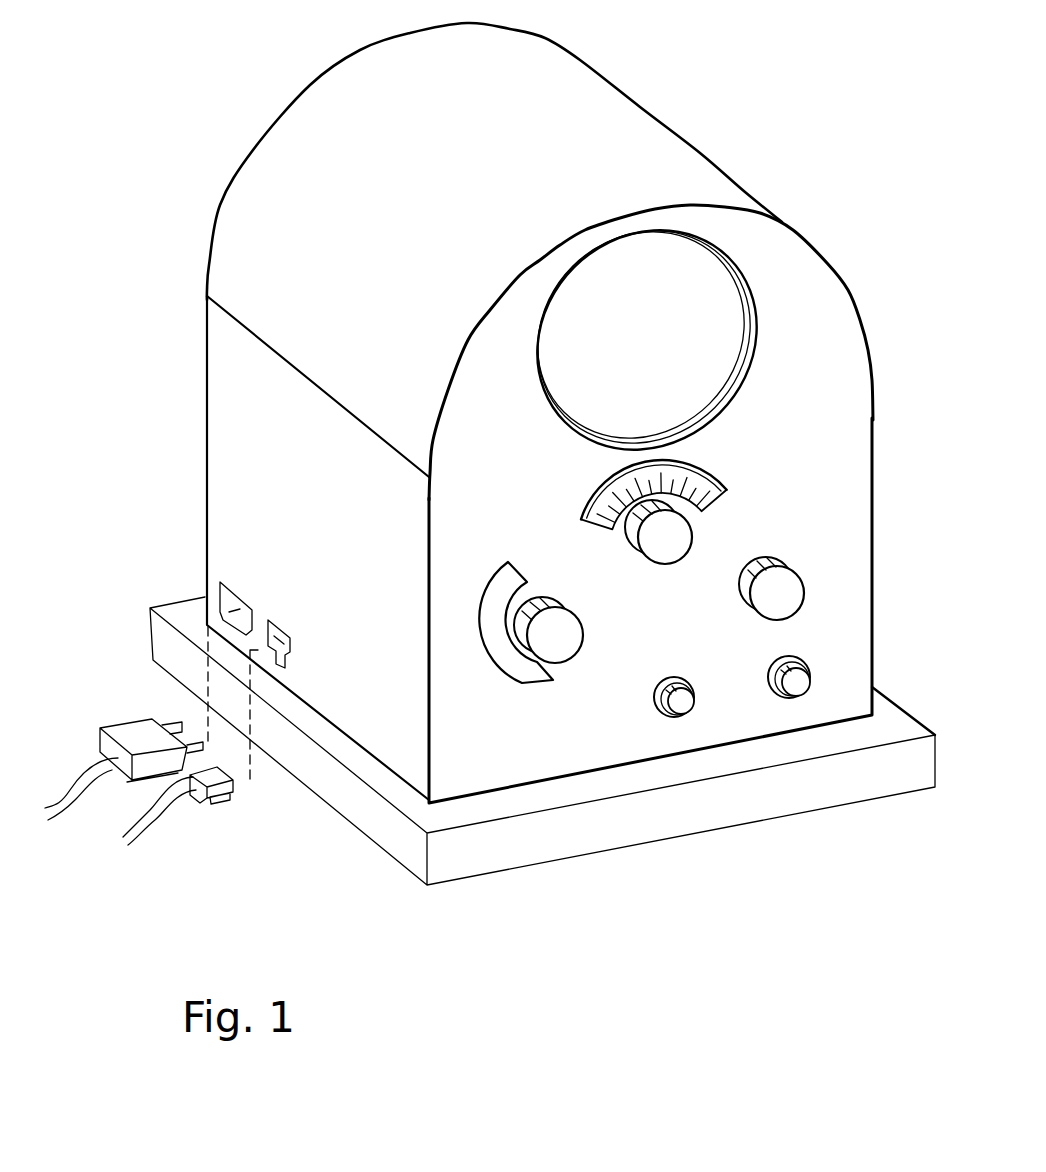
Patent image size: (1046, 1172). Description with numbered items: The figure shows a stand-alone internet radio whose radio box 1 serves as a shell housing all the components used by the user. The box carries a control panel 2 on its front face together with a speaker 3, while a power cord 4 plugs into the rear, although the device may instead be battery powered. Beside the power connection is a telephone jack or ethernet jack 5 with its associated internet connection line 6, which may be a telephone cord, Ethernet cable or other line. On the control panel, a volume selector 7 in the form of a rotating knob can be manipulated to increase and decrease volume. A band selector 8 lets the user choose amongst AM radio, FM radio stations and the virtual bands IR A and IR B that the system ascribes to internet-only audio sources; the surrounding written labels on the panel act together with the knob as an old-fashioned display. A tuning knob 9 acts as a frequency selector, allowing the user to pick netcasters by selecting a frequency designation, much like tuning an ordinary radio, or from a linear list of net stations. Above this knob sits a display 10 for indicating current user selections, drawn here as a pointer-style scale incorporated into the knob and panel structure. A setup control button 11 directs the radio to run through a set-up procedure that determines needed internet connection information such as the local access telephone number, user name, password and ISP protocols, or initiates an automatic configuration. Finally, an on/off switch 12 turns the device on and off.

The radio box 1 is at (221, 206).
The control panel 2 is at (803, 400).
The speaker 3 is at (758, 318).
The power cord 4 is at (140, 720).
The telephone jack or ethernet jack 5 is at (292, 647).
The internet connection line 6 is at (222, 802).
The volume selector 7 is at (557, 668).
The band selector 8 is at (805, 593).
The tuning knob 9 is at (700, 523).
The display 10 is at (728, 474).
The setup control button 11 is at (697, 702).
The on/off switch 12 is at (810, 683).